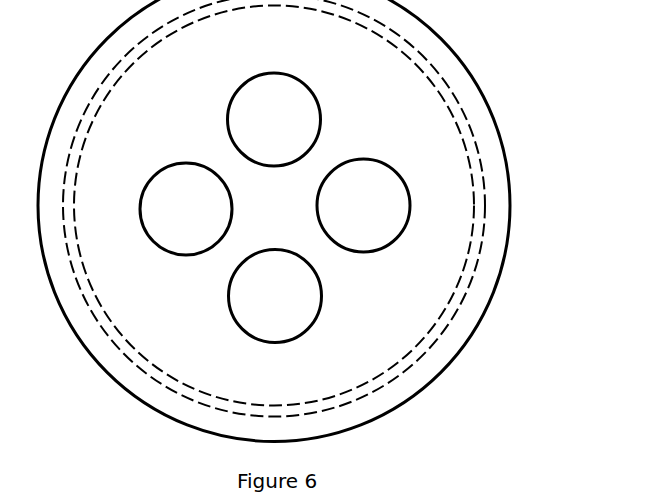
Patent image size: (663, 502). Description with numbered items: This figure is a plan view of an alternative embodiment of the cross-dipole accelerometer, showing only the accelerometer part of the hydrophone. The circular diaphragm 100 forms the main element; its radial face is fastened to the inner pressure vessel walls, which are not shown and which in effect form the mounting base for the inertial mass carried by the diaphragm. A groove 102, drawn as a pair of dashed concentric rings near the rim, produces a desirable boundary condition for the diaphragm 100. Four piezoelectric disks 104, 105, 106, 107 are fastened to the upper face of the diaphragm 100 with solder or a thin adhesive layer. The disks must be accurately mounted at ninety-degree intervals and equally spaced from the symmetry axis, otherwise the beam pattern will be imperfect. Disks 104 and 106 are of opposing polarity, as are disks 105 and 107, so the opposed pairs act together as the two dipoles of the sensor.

The diaphragm 100 is at (437, 293).
The groove 102 is at (422, 358).
The piezoelectric disk 104 is at (169, 183).
The piezoelectric disk 105 is at (297, 98).
The piezoelectric disk 106 is at (375, 178).
The piezoelectric disk 107 is at (287, 320).